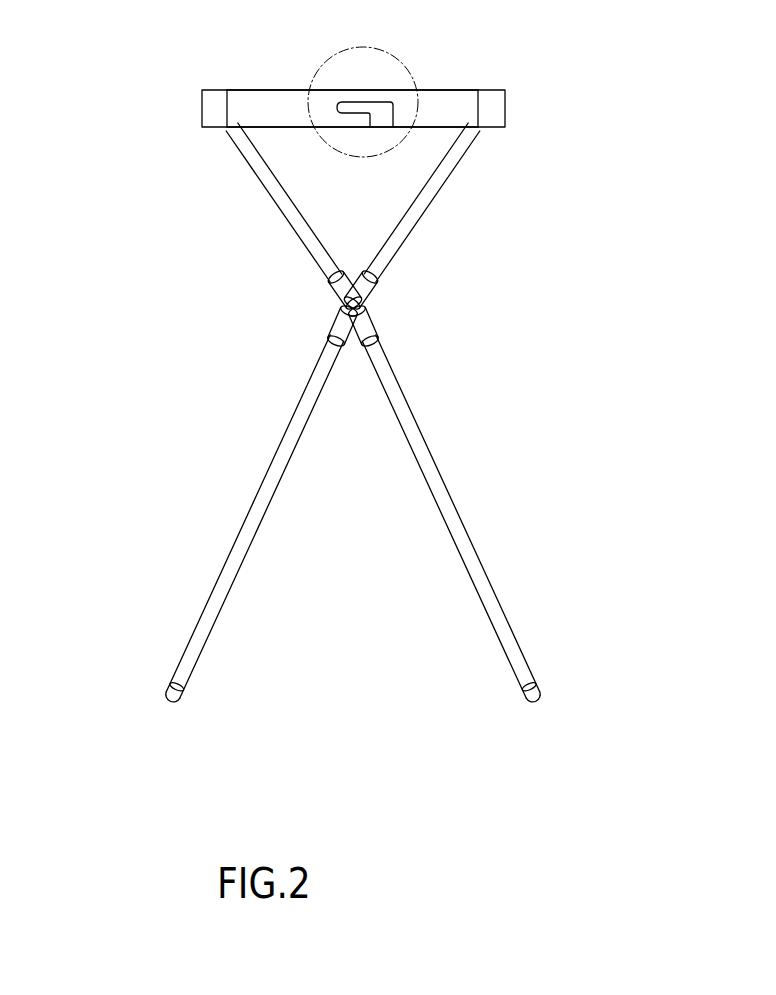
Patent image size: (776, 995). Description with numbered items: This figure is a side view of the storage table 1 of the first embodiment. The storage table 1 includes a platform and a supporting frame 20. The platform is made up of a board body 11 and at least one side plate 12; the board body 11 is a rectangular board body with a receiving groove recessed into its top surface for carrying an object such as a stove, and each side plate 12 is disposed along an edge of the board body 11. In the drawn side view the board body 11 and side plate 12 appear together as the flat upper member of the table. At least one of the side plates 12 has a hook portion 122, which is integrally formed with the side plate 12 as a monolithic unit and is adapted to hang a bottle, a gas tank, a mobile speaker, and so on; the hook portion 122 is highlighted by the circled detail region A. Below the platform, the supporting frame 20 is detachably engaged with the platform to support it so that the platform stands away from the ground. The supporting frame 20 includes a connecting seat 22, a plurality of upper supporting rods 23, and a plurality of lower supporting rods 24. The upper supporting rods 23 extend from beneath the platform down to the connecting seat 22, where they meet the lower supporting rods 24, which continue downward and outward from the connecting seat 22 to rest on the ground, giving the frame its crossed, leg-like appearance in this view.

The storage table 1 is at (648, 132).
The board body 11 is at (243, 90).
The side plate 12 is at (265, 105).
The hook portion 122 is at (349, 118).
The detail region A is at (400, 62).
The supporting frame 20 is at (305, 387).
The connecting seat 22 is at (337, 308).
The upper supporting rods 23 is at (287, 223).
The lower supporting rods 24 is at (227, 555).